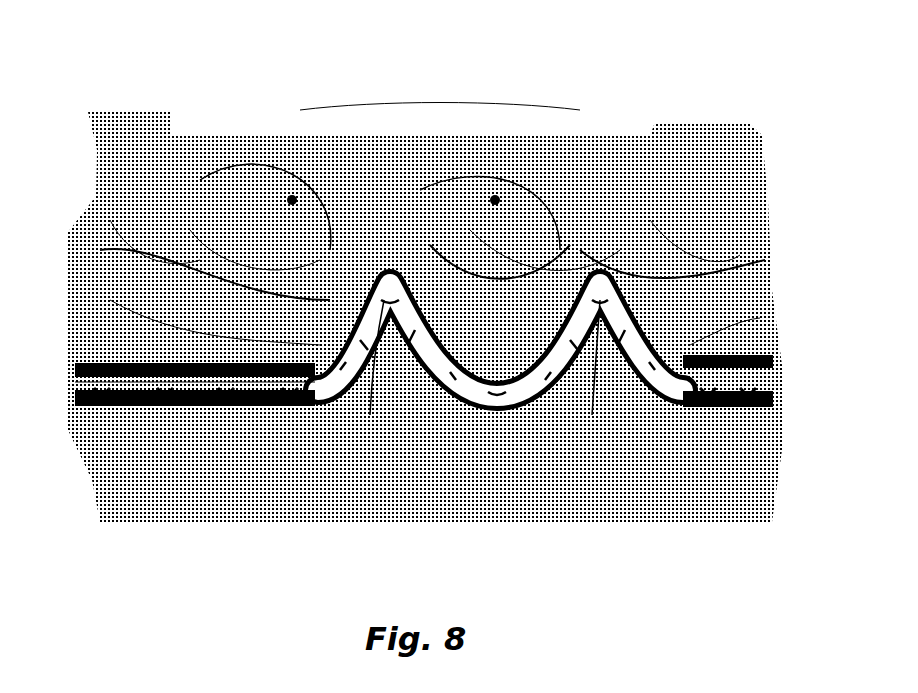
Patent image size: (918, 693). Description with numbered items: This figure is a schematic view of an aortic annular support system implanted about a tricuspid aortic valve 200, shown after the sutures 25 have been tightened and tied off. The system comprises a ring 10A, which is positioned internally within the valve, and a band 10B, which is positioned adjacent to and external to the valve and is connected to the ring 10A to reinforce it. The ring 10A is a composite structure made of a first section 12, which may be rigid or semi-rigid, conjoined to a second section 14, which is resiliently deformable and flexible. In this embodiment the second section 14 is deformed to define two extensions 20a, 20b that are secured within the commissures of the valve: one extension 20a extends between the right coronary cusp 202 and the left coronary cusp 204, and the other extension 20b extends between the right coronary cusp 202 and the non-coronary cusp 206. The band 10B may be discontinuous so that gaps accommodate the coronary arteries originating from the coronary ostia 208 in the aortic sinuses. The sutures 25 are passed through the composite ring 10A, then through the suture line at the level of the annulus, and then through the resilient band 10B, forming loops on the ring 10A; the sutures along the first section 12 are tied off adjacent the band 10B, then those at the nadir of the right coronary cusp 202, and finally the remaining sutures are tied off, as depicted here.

The ring 10A is at (110, 415).
The band 10B is at (312, 345).
The first section 12 is at (137, 408).
The second section 14 is at (493, 408).
The extension 20a is at (388, 300).
The extension 20b is at (600, 300).
The sutures 25 is at (290, 408).
The tricuspid aortic valve 200 is at (440, 88).
The right coronary cusp 202 is at (540, 190).
The left coronary cusp 204 is at (235, 203).
The non-coronary cusp 206 is at (140, 203).
The coronary ostium 208 is at (495, 198).